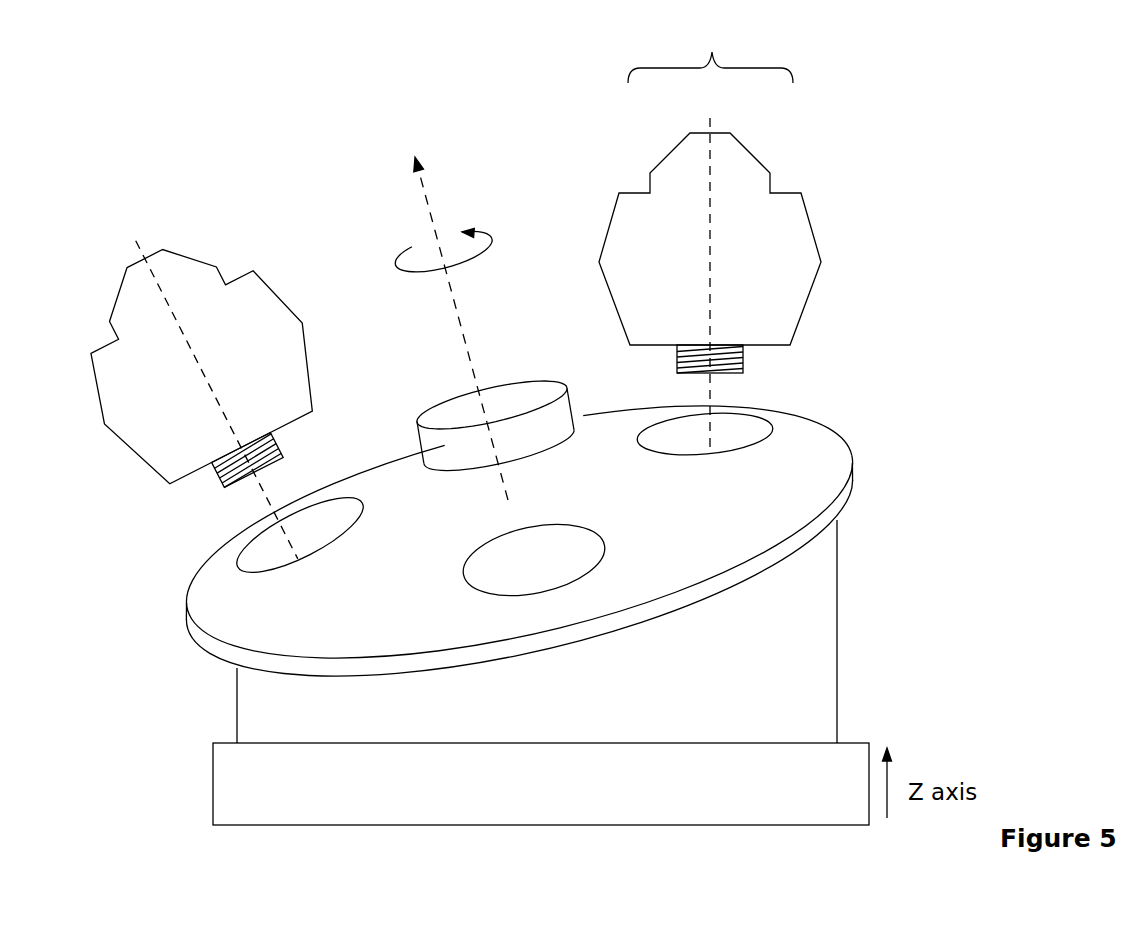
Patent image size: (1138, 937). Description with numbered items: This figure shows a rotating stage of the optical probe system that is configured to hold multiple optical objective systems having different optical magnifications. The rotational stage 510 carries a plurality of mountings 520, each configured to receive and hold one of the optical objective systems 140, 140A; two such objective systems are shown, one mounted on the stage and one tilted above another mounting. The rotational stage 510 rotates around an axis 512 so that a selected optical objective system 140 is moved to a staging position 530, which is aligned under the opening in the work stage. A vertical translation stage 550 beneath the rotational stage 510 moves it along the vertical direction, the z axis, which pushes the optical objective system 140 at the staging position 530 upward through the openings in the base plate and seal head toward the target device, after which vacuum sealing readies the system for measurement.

The optical objective system 140 is at (797, 218).
The optical objective system 140A is at (262, 292).
The rotational stage 510 is at (833, 448).
The axis 512 is at (431, 208).
The mountings 520 is at (272, 552).
The staging position 530 is at (710, 51).
The vertical translation stage 550 is at (568, 796).